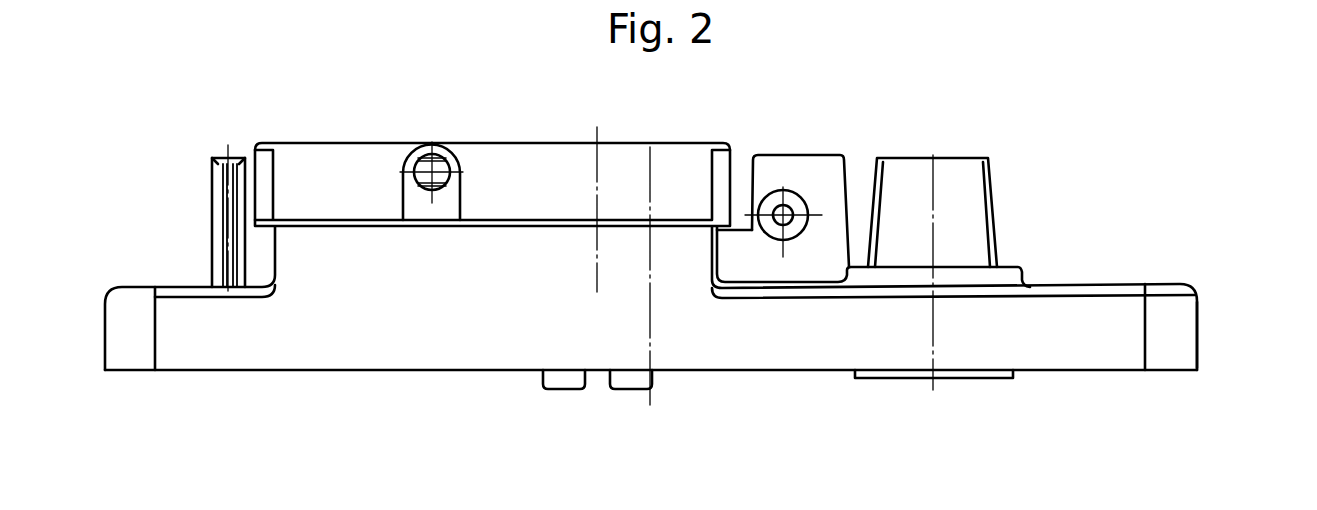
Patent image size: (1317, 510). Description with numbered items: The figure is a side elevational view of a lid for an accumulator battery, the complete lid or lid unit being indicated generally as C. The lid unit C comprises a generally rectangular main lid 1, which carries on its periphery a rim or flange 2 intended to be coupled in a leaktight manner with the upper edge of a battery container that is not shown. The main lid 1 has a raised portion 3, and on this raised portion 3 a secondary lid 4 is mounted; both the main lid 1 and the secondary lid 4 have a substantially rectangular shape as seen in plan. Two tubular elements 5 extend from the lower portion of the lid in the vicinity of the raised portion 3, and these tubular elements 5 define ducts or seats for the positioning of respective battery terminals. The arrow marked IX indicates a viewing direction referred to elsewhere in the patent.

The main lid 1 is at (1097, 277).
The rim or flange 2 is at (1198, 320).
The raised portion 3 is at (272, 245).
The secondary lid 4 is at (503, 135).
The tubular elements 5 is at (993, 207).
The lid unit C is at (1050, 128).
The view direction IX is at (695, 384).